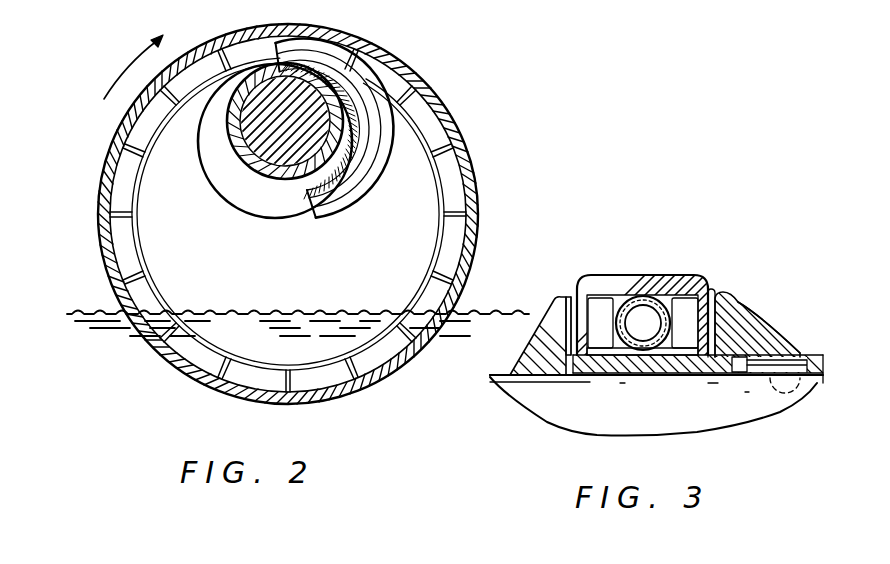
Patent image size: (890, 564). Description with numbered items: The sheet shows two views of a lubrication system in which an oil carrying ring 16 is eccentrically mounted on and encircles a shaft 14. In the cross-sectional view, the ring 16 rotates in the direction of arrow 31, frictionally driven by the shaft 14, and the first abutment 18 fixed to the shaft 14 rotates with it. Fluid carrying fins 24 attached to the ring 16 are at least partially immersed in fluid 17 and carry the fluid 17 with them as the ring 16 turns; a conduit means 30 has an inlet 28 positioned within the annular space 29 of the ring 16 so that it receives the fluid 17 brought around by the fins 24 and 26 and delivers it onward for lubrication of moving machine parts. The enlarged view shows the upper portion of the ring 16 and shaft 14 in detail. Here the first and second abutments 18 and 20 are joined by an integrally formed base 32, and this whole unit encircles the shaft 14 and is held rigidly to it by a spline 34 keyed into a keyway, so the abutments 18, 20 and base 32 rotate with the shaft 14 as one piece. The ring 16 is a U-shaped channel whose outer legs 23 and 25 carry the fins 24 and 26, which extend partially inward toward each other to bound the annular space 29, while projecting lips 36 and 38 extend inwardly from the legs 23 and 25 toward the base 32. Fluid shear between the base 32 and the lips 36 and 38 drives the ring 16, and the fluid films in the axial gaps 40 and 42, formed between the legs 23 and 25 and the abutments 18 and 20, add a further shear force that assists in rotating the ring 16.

In FIG. 2, the shaft 14 is at (270, 150).
In FIG. 3, the shaft 14 is at (570, 408).
In FIG. 2, the oil carrying ring 16 is at (477, 218).
In FIG. 3, the oil carrying ring 16 is at (697, 254).
In FIG. 2, the fluid 17 is at (98, 313).
In FIG. 2, the first abutment 18 is at (232, 180).
In FIG. 3, the first abutment 18 is at (546, 322).
In FIG. 3, the second abutment 20 is at (748, 326).
In FIG. 3, the outer leg 23 is at (580, 328).
In FIG. 2, the fins 24 is at (450, 205).
In FIG. 3, the fins 24 is at (593, 295).
In FIG. 3, the outer leg 25 is at (721, 316).
In FIG. 3, the fins 26 is at (665, 345).
In FIG. 2, the inlet 28 is at (277, 48).
In FIG. 3, the inlet 28 is at (658, 295).
In FIG. 3, the annular space 29 is at (630, 298).
In FIG. 2, the conduit means 30 is at (296, 213).
In FIG. 2, the arrow 31 is at (122, 72).
In FIG. 2, the base 32 is at (240, 147).
In FIG. 3, the base 32 is at (590, 365).
In FIG. 3, the spline 34 is at (782, 363).
In FIG. 3, the projecting lip 36 is at (608, 353).
In FIG. 3, the projecting lip 38 is at (686, 330).
In FIG. 3, the axial gap 40 is at (569, 297).
In FIG. 3, the axial gap 42 is at (712, 291).